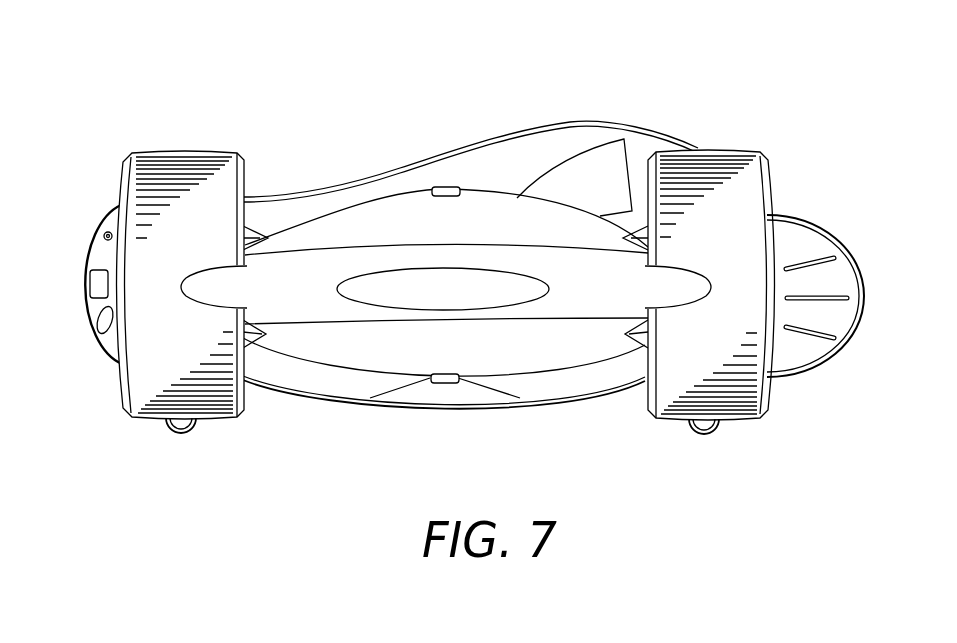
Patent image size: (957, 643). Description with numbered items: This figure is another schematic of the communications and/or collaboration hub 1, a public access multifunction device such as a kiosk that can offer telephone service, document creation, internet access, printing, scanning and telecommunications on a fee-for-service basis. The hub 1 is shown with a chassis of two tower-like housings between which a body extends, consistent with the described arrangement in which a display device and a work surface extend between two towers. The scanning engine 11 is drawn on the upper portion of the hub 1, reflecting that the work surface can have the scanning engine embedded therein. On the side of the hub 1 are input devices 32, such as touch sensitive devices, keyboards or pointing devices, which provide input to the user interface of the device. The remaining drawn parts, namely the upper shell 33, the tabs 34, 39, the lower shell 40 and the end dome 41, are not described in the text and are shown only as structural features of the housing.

The communications and/or collaboration hub 1 is at (437, 74).
The scanning engine 11 is at (604, 153).
The input devices 32 is at (105, 320).
The upper body shell 33 is at (343, 218).
The tab 34 is at (446, 186).
The tab 39 is at (446, 384).
The lower body shell 40 is at (576, 381).
The rear dome 41 is at (833, 238).